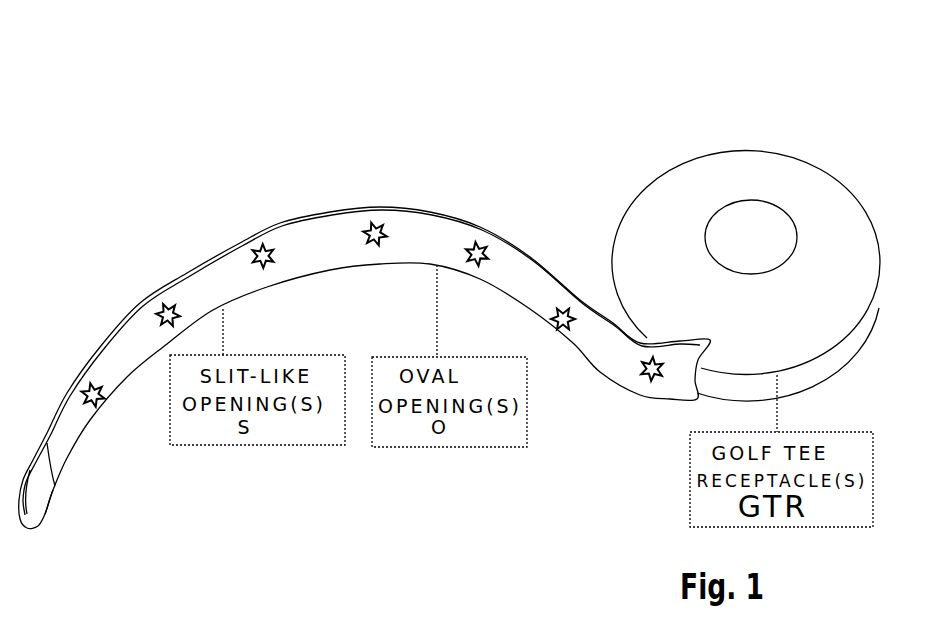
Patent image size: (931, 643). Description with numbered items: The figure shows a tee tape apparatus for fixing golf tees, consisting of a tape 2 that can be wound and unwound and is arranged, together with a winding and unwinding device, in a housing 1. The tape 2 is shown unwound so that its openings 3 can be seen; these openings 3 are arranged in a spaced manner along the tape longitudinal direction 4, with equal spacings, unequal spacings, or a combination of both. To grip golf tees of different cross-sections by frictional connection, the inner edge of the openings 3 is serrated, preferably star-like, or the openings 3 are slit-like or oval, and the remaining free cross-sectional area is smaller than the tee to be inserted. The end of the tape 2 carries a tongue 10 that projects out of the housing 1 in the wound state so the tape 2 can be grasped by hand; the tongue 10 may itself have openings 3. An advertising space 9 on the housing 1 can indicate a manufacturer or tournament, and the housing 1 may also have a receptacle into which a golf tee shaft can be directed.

The housing 1 is at (713, 120).
The tape 2 is at (318, 233).
The openings 3 is at (483, 247).
The tape longitudinal direction 4 is at (80, 473).
The advertising space 9 is at (780, 173).
The tongue 10 is at (33, 467).